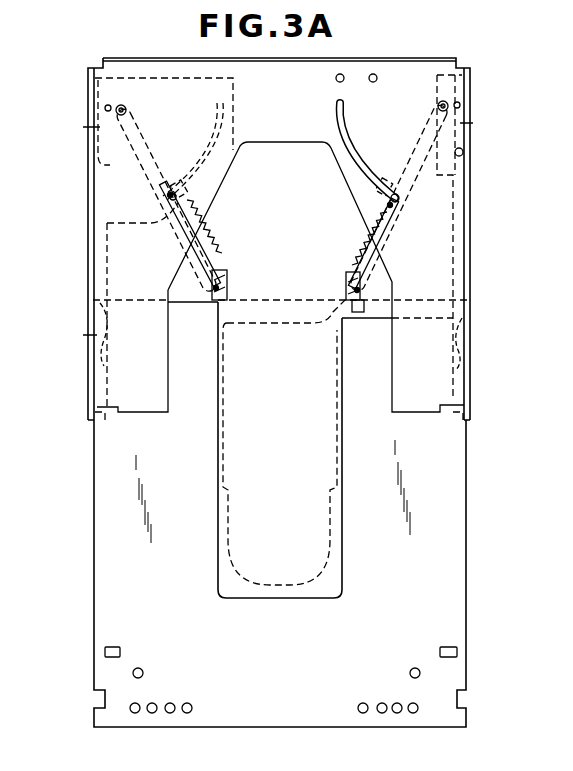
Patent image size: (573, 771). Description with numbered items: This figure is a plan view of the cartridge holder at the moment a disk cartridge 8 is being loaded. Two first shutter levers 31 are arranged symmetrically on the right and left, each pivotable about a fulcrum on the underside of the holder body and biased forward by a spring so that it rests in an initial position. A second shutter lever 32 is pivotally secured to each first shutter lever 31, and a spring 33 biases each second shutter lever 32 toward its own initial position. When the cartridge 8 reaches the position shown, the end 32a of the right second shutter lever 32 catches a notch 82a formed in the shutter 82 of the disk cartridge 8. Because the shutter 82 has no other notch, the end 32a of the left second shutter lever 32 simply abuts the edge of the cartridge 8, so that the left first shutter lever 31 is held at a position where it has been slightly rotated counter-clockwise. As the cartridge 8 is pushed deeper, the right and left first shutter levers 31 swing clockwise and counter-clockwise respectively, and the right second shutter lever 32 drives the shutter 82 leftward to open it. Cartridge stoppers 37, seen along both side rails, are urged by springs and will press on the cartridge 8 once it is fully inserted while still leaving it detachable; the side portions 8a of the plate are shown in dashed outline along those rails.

The disk cartridge 8 is at (335, 712).
The plate side portion 8a is at (96, 324).
The first shutter lever 31 is at (156, 152).
The second shutter lever 32 is at (226, 265).
The end of second shutter lever 32a is at (225, 297).
The spring 33 is at (335, 158).
The cartridge stopper 37 is at (86, 125).
The shutter 82 is at (341, 578).
The notch 82a is at (322, 325).